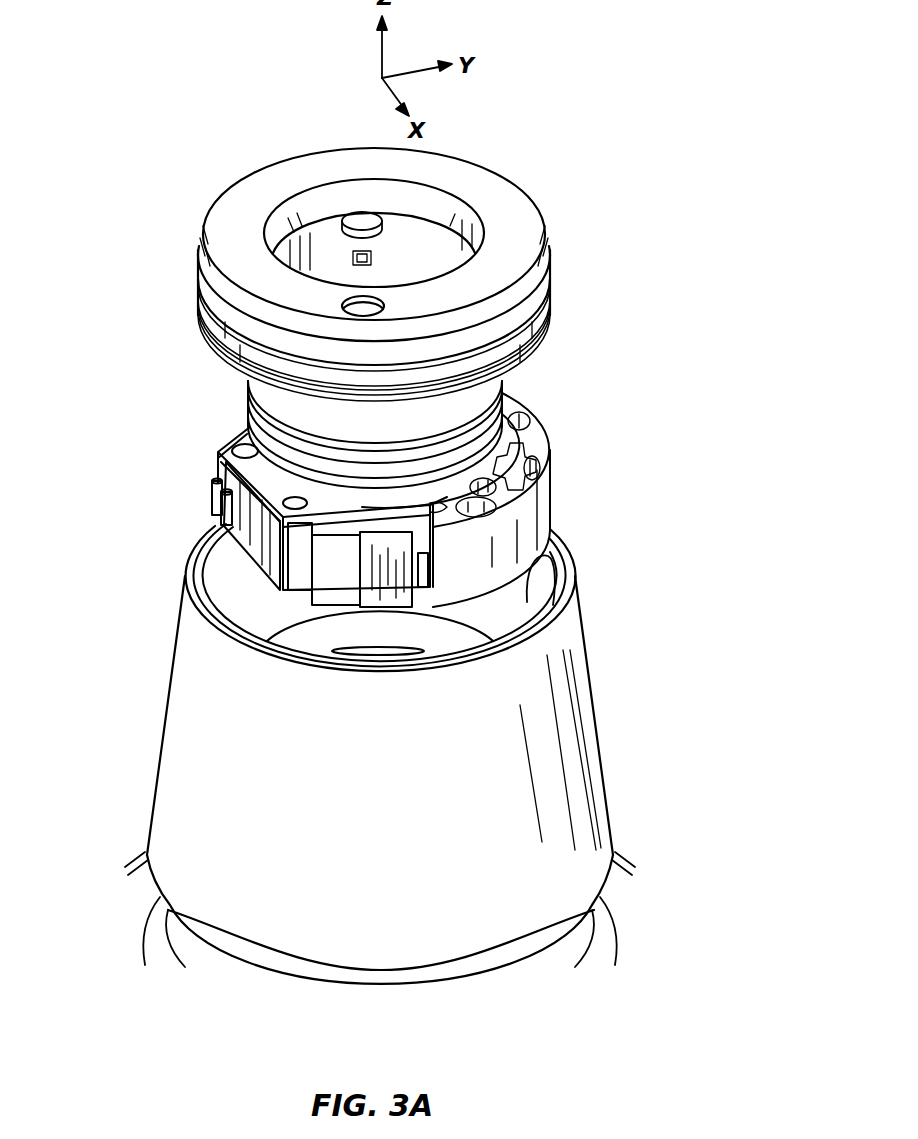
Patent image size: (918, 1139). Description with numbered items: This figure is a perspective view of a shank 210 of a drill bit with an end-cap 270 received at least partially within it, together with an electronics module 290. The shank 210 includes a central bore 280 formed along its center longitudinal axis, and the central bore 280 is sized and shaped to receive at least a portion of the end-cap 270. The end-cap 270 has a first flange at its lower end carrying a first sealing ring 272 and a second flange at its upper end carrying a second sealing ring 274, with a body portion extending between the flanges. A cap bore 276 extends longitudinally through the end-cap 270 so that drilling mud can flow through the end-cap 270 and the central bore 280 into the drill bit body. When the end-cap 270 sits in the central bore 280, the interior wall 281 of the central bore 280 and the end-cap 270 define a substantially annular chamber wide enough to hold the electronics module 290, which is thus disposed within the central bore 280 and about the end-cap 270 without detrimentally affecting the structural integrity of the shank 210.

The shank 210 is at (572, 812).
The end-cap 270 is at (540, 191).
The first sealing ring 272 is at (520, 407).
The second sealing ring 274 is at (550, 316).
The cap bore 276 is at (316, 243).
The central bore 280 is at (243, 588).
The interior wall 281 is at (547, 574).
The electronics module 290 is at (225, 446).